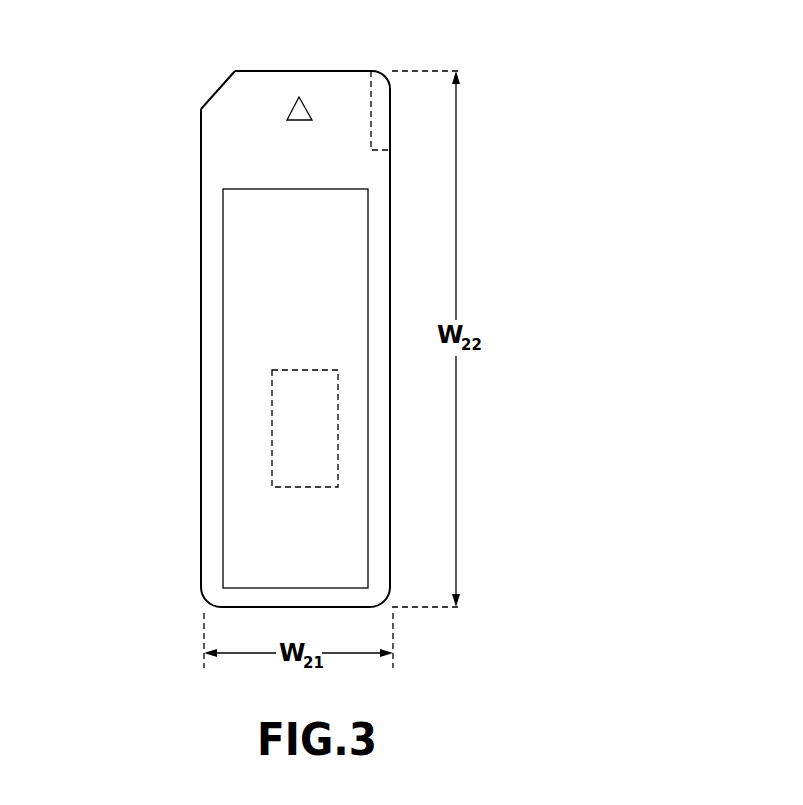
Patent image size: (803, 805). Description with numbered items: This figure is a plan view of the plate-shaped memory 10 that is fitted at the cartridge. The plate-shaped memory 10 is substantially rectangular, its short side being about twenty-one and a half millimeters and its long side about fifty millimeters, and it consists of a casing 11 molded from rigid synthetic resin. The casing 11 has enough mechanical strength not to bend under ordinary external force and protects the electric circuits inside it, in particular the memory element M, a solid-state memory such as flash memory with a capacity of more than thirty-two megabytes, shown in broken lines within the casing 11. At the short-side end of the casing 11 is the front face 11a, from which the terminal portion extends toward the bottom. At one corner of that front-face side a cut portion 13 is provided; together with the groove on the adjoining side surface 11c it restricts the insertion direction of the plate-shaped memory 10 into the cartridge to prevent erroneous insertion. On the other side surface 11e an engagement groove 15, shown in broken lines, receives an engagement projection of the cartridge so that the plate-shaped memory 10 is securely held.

The plate-shaped memory 10 is at (176, 248).
The casing 11 is at (322, 82).
The front face 11a is at (267, 71).
The side surface 11c is at (201, 520).
The other side surface 11e is at (391, 505).
The cut portion 13 is at (213, 95).
The engagement groove 15 is at (392, 123).
The memory element M is at (270, 430).